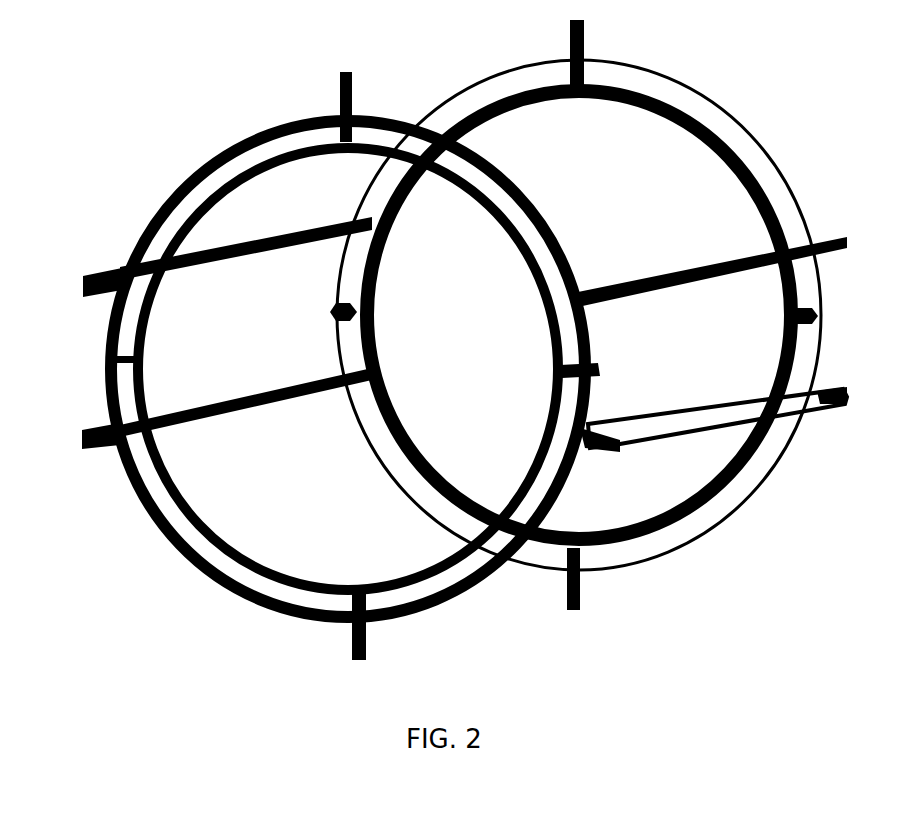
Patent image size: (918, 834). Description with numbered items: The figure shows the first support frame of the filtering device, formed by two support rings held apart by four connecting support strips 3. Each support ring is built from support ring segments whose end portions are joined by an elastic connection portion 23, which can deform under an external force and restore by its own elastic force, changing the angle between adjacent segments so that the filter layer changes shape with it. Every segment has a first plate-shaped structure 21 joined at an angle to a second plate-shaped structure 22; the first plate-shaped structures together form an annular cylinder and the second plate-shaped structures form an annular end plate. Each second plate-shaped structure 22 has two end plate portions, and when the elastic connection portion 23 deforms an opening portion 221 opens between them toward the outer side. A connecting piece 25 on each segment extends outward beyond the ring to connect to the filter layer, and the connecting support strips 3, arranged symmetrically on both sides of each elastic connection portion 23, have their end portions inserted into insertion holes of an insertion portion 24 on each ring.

The first plate-shaped structure 21 is at (406, 303).
The second plate-shaped structure 22 is at (450, 317).
The opening portion 221 is at (307, 79).
The connecting support strip 3 is at (464, 234).
The connecting piece 25 is at (574, 338).
The insertion portion 24 is at (72, 235).
The elastic connection portion 23 is at (79, 310).